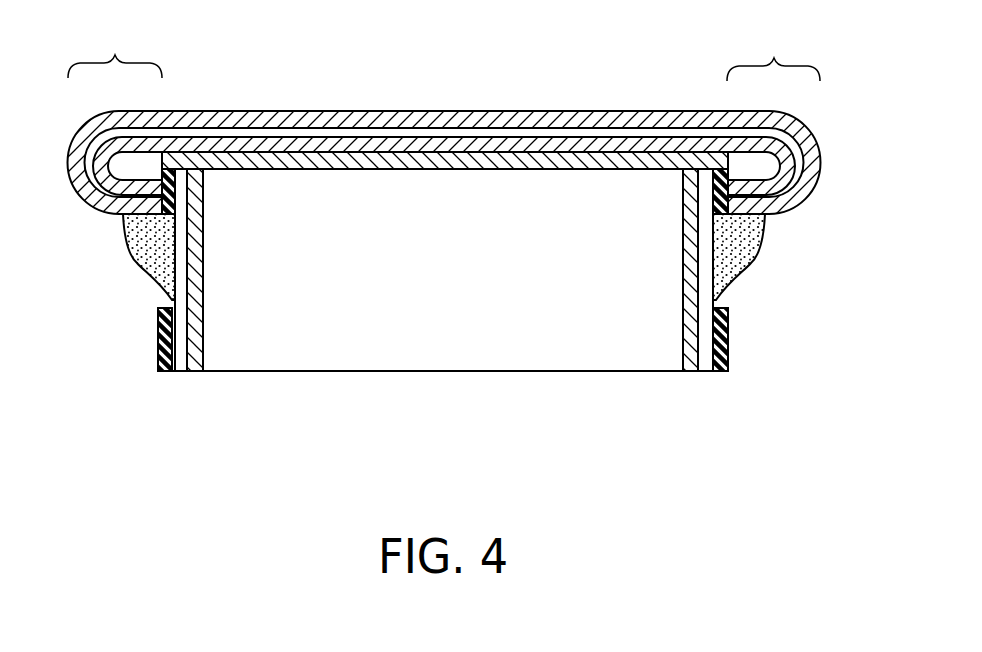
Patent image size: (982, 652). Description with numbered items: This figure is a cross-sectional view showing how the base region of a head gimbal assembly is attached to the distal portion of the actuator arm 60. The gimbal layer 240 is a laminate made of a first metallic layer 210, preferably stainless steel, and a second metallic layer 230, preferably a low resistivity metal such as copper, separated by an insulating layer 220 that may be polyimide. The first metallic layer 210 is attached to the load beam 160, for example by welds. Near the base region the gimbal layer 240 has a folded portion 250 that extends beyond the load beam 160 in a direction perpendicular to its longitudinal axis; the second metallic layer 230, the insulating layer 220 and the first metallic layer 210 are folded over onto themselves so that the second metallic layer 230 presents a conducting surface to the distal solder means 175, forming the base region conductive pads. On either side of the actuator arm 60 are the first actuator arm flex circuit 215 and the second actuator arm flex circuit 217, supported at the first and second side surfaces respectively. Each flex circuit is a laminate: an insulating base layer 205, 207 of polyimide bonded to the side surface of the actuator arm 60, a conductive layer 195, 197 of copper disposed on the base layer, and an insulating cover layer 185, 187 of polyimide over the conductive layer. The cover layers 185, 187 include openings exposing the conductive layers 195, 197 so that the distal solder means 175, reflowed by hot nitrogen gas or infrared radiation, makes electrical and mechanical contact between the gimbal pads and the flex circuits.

The actuator arm 60 is at (433, 353).
The load beam 160 is at (426, 164).
The distal solder means 175 is at (135, 250).
The insulating cover layer 185 is at (163, 371).
The insulating cover layer 187 is at (723, 372).
The conductive layer 195 is at (182, 372).
The conductive layer 197 is at (705, 372).
The insulating base layer 205 is at (200, 372).
The insulating base layer 207 is at (690, 372).
The first metallic layer 210 is at (530, 150).
The insulating layer 220 is at (430, 136).
The second metallic layer 230 is at (316, 120).
The gimbal layer 240 is at (830, 126).
The folded portion 250 is at (444, 53).
The first actuator arm flex circuit 215 is at (120, 352).
The second actuator arm flex circuit 217 is at (765, 355).